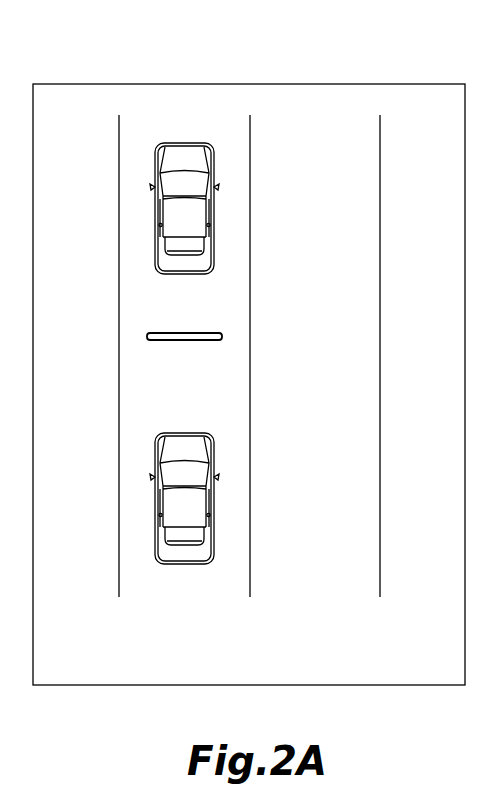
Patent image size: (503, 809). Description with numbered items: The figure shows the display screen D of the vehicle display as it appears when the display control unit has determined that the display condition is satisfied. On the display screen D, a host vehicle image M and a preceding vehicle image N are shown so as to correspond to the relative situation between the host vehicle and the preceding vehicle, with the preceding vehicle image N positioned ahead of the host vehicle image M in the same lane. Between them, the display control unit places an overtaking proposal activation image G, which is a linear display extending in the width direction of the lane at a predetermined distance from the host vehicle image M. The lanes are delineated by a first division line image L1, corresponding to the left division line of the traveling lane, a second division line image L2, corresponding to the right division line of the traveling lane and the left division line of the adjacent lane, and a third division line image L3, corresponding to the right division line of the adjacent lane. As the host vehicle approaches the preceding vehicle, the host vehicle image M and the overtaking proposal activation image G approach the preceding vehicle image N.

The display screen D is at (97, 83).
The preceding vehicle image N is at (155, 217).
The overtaking proposal activation image G is at (147, 335).
The host vehicle image M is at (155, 507).
The first division line image L1 is at (120, 592).
The second division line image L2 is at (250, 593).
The third division line image L3 is at (380, 593).